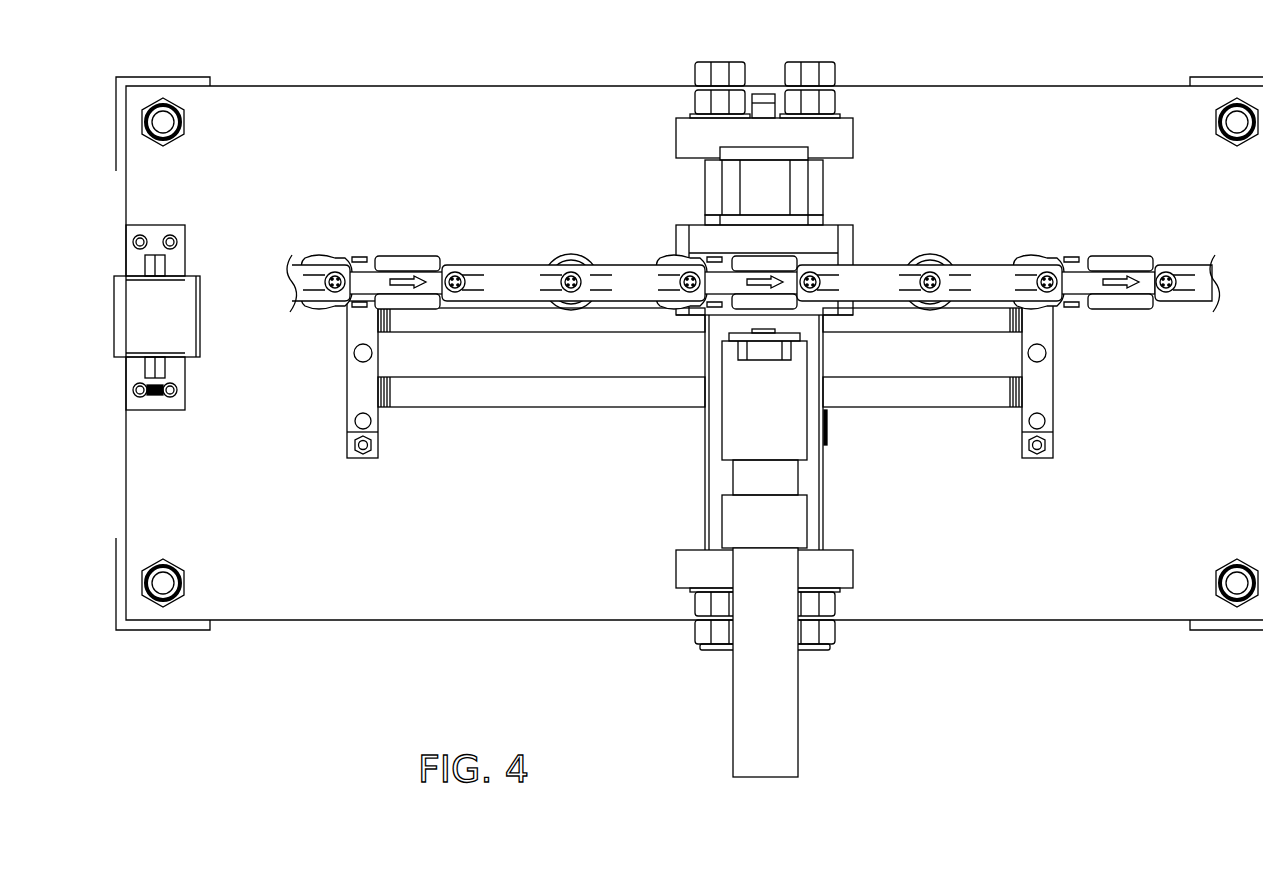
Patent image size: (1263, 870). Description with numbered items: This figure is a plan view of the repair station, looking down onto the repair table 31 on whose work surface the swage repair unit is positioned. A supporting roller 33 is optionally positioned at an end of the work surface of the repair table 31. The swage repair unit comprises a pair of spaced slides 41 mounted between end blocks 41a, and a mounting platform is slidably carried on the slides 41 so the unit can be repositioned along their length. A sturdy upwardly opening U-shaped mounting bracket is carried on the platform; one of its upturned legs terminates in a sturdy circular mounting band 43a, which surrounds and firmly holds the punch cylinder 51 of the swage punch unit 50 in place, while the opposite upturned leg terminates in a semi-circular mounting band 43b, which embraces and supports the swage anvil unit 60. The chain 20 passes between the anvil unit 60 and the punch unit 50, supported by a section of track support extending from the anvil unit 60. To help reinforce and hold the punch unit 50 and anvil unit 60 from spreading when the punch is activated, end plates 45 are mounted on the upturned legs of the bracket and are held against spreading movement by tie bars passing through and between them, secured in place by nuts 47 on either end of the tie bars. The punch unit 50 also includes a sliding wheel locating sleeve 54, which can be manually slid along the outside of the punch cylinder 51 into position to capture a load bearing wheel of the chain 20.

The chain 20 is at (497, 262).
The repair table 31 is at (540, 555).
The supporting roller 33 is at (125, 315).
The slides 41 is at (490, 320).
The end blocks 41a is at (356, 388).
The circular mounting band 43a is at (793, 518).
The semi-circular mounting band 43b is at (735, 180).
The end plates 45 is at (688, 130).
The nuts 47 is at (808, 75).
The swage punch unit 50 is at (660, 540).
The punch cylinder 51 is at (777, 655).
The wheel locating sleeve 54 is at (777, 417).
The swage anvil unit 60 is at (860, 88).